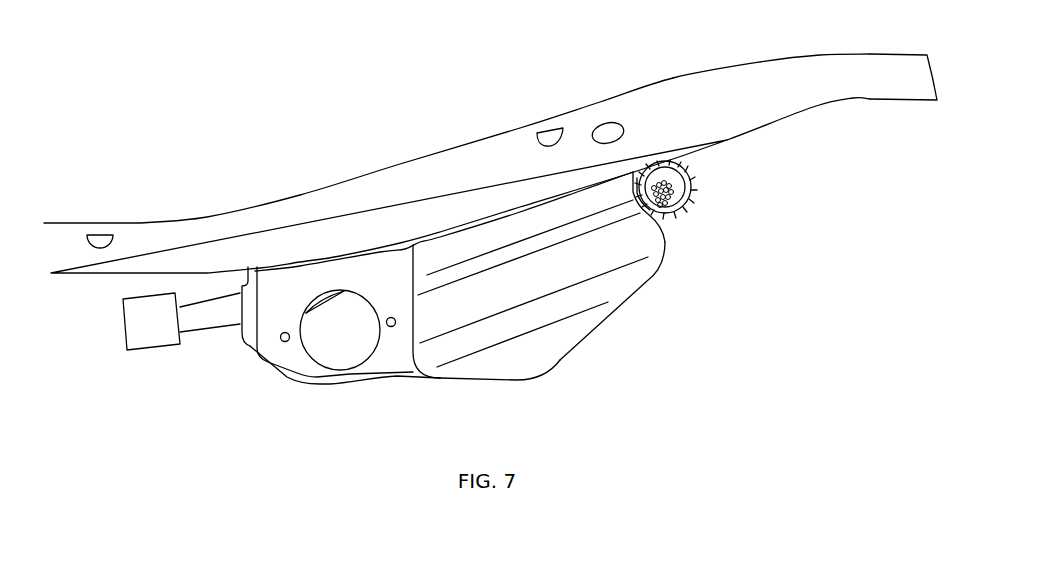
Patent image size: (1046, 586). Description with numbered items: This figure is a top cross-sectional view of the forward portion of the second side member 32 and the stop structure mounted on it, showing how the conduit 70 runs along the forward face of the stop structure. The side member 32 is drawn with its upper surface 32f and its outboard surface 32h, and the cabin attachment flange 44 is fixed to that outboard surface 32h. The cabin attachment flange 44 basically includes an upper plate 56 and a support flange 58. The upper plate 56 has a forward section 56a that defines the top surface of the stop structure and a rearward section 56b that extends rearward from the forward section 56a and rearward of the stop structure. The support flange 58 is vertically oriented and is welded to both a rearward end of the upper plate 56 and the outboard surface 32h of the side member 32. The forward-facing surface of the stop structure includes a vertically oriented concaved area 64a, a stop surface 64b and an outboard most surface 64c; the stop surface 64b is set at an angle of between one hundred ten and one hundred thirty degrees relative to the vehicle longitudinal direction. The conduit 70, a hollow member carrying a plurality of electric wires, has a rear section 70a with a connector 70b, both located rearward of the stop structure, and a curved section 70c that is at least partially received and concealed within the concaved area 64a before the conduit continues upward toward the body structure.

The second side member 32 is at (673, 78).
The upper surface 32f is at (767, 90).
The outboard surface 32h is at (813, 107).
The upper plate 56 is at (382, 277).
The forward section 56a is at (562, 265).
The rearward section 56b is at (288, 292).
The support flange 58 is at (254, 326).
The cabin attachment flange 44 is at (298, 381).
The concaved area 64a is at (672, 207).
The stop surface 64b is at (580, 337).
The outboard most surface 64c is at (485, 380).
The conduit 70 is at (693, 197).
The rear section 70a is at (203, 315).
The connector 70b is at (152, 325).
The curved section 70c is at (683, 167).